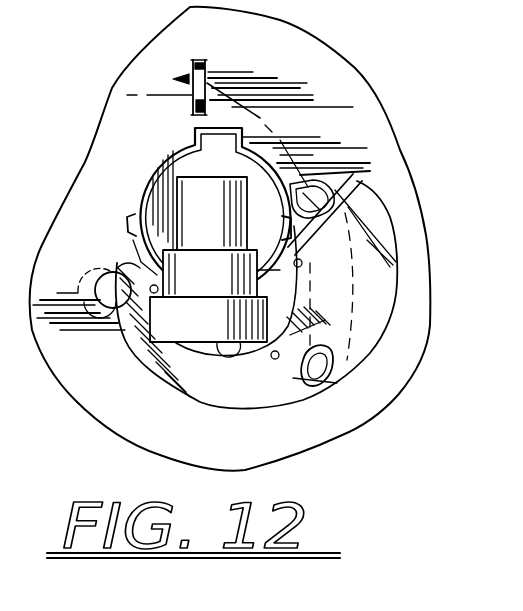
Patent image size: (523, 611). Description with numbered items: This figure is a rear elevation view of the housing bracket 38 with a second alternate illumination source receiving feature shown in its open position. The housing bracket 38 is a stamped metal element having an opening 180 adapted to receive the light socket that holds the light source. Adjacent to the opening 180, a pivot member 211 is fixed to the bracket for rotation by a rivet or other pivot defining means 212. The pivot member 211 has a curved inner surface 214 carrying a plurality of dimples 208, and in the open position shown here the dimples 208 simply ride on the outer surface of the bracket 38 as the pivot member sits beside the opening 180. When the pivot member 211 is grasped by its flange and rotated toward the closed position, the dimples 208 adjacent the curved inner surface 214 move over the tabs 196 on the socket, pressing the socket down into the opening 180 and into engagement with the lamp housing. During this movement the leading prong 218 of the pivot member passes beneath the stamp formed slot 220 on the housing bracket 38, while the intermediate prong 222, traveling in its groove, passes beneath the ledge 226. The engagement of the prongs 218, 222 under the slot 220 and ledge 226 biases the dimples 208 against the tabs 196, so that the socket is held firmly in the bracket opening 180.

The housing bracket 38 is at (151, 46).
The stamp formed slot 220 is at (203, 78).
The opening 180 is at (167, 153).
The tabs 196 is at (124, 255).
The pivot defining means 212 is at (116, 289).
The dimples 208 is at (128, 330).
The curved inner surface 214 is at (240, 357).
The intermediate prong 222 is at (331, 380).
The pivot member 211 is at (387, 274).
The leading prong 218 is at (327, 202).
The ledge 226 is at (313, 187).